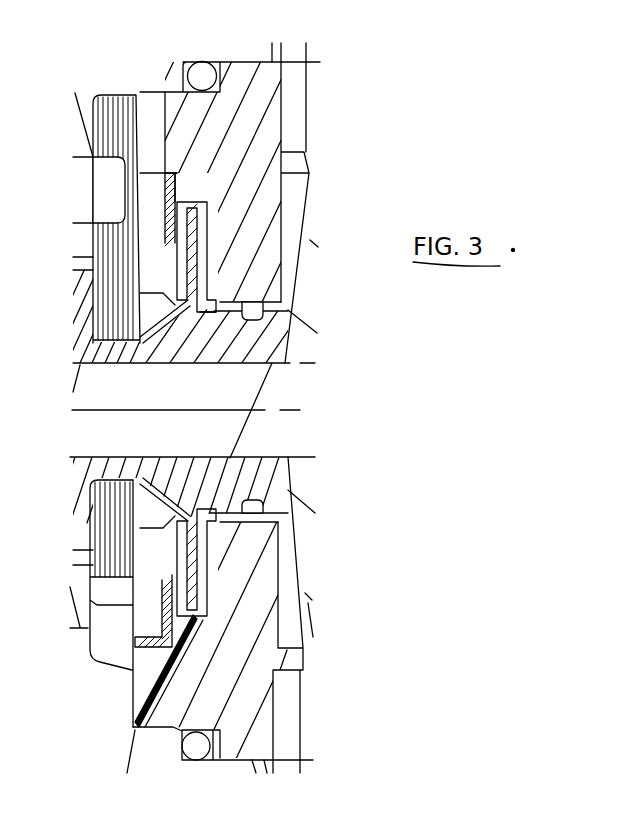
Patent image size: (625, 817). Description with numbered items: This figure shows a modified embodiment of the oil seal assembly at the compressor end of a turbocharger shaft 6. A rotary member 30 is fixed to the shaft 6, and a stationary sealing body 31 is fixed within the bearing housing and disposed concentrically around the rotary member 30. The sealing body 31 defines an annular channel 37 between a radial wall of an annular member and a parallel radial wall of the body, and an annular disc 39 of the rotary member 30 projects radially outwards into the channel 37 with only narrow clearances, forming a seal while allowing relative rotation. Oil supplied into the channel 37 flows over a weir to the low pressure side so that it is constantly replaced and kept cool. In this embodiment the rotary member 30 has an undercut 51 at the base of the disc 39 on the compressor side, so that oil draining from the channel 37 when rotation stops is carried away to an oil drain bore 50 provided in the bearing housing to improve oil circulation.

The shaft 6 is at (303, 413).
The rotary member 30 is at (278, 323).
The sealing body 31 is at (293, 162).
The annular channel 37 is at (195, 202).
The annular disc 39 is at (205, 226).
The oil drain bore 50 is at (131, 697).
The undercut 51 is at (220, 316).